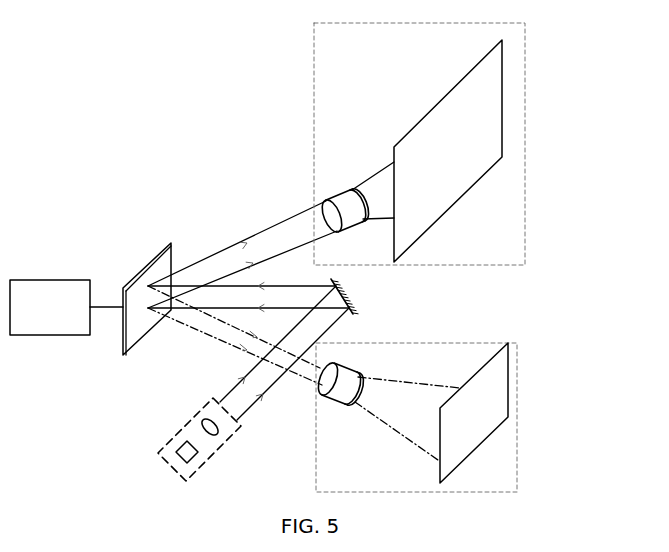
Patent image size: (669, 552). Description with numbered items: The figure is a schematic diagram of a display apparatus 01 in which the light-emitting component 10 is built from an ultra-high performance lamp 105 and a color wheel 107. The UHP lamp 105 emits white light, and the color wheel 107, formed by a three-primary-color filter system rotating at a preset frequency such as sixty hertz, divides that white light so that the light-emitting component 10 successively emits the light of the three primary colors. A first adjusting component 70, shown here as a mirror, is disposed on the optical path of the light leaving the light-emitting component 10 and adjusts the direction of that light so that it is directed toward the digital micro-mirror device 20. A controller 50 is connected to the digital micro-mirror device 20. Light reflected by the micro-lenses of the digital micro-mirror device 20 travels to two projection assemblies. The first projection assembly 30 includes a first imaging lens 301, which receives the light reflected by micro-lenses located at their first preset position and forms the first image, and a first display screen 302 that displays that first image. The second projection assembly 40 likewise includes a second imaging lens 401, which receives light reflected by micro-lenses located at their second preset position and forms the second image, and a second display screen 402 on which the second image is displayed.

The display apparatus 01 is at (113, 168).
The controller 50 is at (30, 288).
The digital micro-mirror device 20 is at (140, 335).
The first projection assembly 30 is at (317, 67).
The first imaging lens 301 is at (323, 203).
The first display screen 302 is at (490, 113).
The first adjusting component 70 is at (348, 292).
The second projection assembly 40 is at (502, 462).
The second imaging lens 401 is at (320, 393).
The second display screen 402 is at (488, 425).
The light-emitting component 10 is at (213, 455).
The UHP lamp 105 is at (177, 440).
The color wheel 107 is at (197, 418).